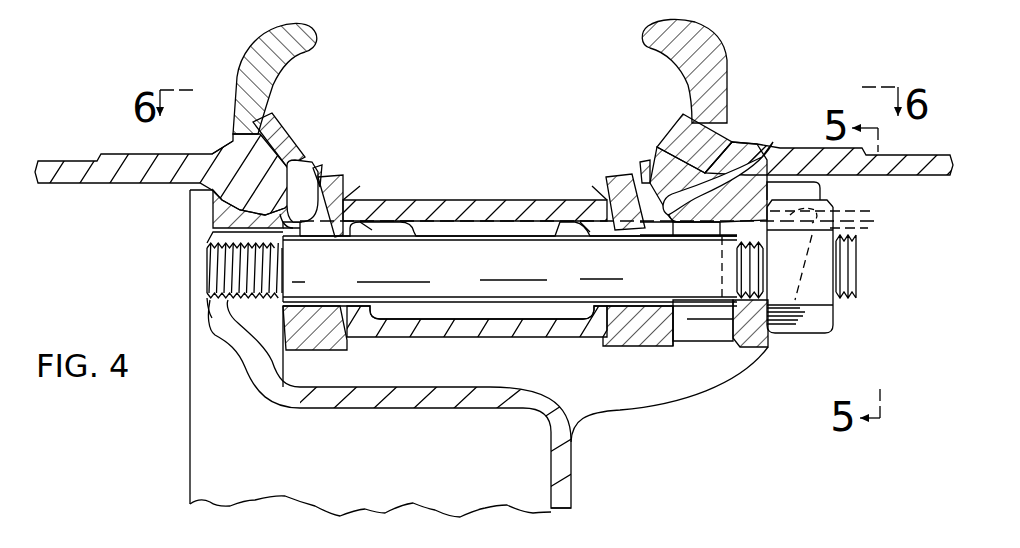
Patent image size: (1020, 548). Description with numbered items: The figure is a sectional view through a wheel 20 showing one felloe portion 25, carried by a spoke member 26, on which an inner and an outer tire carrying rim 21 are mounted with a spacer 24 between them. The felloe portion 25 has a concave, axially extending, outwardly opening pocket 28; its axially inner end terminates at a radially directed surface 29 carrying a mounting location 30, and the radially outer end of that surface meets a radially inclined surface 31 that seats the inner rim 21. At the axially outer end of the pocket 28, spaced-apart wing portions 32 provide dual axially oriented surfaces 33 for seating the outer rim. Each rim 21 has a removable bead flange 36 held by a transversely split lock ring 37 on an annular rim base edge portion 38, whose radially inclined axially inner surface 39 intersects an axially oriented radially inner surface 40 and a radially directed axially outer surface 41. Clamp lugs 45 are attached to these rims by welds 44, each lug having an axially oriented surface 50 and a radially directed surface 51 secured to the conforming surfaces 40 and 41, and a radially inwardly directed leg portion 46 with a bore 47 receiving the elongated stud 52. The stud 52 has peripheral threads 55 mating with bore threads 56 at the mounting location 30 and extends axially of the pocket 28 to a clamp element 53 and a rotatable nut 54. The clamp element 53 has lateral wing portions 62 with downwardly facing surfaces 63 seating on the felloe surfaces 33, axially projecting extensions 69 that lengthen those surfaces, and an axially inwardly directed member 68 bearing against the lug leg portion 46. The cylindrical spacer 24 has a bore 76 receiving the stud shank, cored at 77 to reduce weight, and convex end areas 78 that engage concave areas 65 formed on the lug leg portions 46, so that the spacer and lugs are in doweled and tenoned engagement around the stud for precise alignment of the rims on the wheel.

The wheel 20 is at (624, 470).
The tire carrying rim 21 is at (80, 106).
The spacer 24 is at (471, 188).
The felloe portion 25 is at (220, 263).
The spoke member 26 is at (190, 470).
The pocket 28 is at (435, 432).
The radially directed surface 29 is at (288, 326).
The mounting location 30 is at (208, 281).
The radially inclined surface 31 is at (233, 178).
The wing portion 32 is at (698, 400).
The axially oriented surface 33 is at (833, 211).
The removable bead flange 36 is at (262, 50).
The lock ring 37 is at (272, 128).
The rim base edge portion 38 is at (301, 162).
The radially inclined axially inner surface 39 is at (205, 218).
The axially oriented radially inner surface 40 is at (280, 231).
The radially directed axially outer surface 41 is at (344, 180).
The weld 44 is at (322, 183).
The clamp lug 45 is at (314, 364).
The leg portion 46 is at (335, 346).
The bore 47 is at (312, 307).
The axially oriented surface 50 is at (317, 220).
The radially directed surface 51 is at (293, 197).
The elongated stud 52 is at (490, 250).
The clamp element 53 is at (766, 345).
The nut 54 is at (822, 326).
The peripheral threads 55 is at (214, 286).
The bore threads 56 is at (207, 303).
The lateral wing portion 62 is at (707, 266).
The axially oriented surface 63 is at (861, 232).
The concave area 65 is at (413, 227).
The axially inwardly directed member 68 is at (703, 340).
The axially projecting extension 69 is at (810, 193).
The bore 76 is at (360, 224).
The cored portion 77 is at (470, 316).
The convex area 78 is at (352, 194).